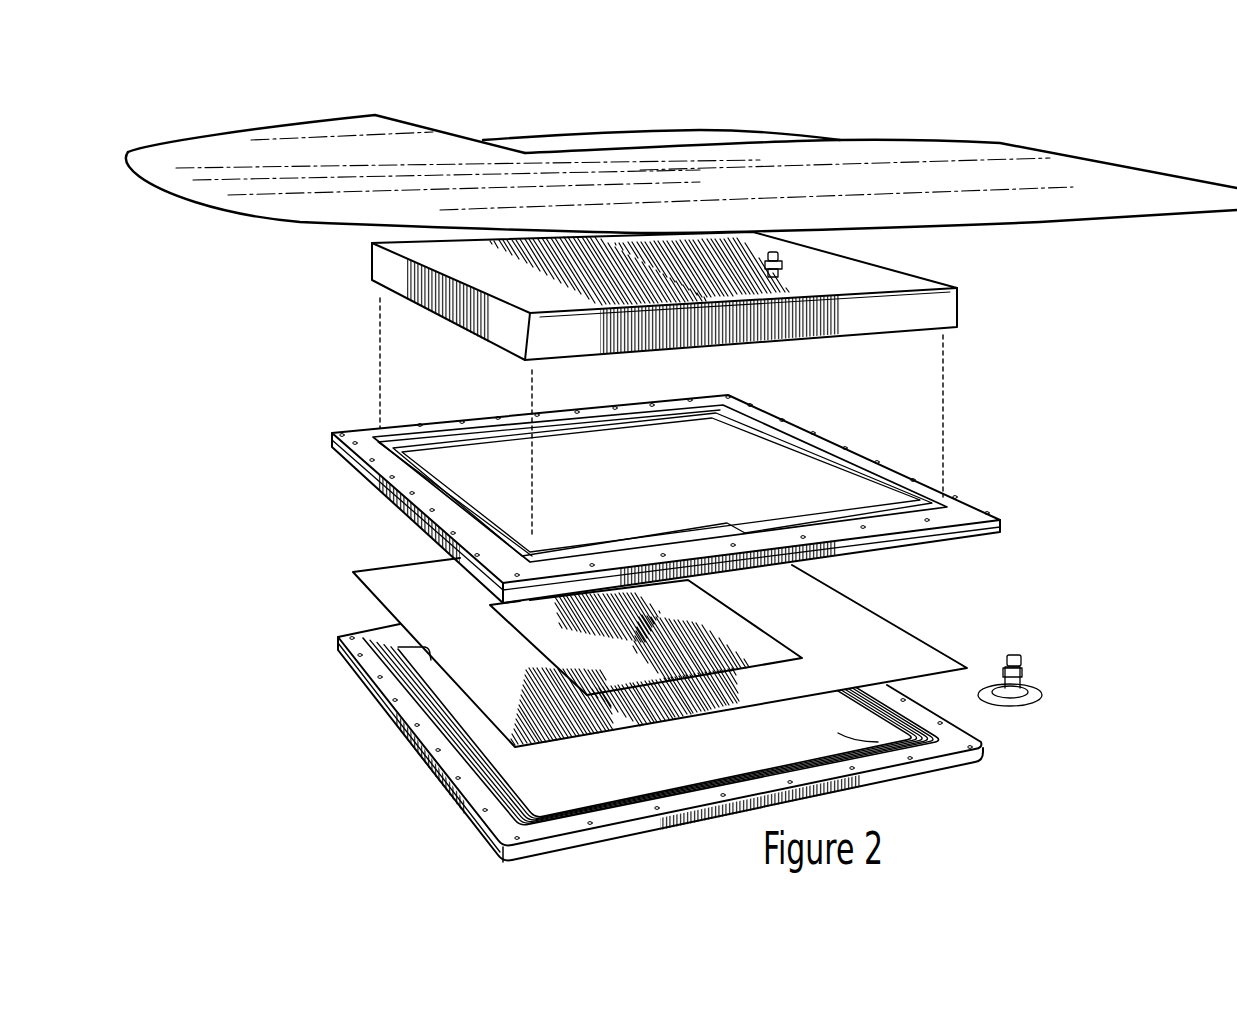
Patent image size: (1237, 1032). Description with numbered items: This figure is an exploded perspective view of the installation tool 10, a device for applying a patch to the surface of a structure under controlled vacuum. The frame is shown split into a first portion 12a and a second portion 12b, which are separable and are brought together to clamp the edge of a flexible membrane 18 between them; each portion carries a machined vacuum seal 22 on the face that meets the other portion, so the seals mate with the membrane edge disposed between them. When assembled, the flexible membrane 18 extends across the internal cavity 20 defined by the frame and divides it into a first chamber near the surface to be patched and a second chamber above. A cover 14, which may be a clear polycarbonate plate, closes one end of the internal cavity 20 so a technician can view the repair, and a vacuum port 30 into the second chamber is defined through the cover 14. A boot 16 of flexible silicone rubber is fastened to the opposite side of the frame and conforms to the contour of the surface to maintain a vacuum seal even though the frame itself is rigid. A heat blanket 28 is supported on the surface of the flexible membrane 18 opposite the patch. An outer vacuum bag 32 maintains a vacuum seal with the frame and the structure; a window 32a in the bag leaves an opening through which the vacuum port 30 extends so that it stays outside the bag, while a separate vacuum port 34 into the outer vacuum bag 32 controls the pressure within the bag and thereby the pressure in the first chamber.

The installation tool 10 is at (1056, 404).
The first portion 12a is at (487, 817).
The second portion 12b is at (978, 510).
The cover 14 is at (940, 308).
The boot 16 is at (972, 767).
The flexible membrane 18 is at (890, 647).
The internal cavity 20 is at (770, 478).
The machined vacuum seal 22 is at (623, 807).
The heat blanket 28 is at (757, 648).
The vacuum port 30 is at (783, 270).
The outer vacuum bag 32 is at (223, 160).
The window 32a is at (573, 142).
The vacuum port 34 is at (1022, 673).